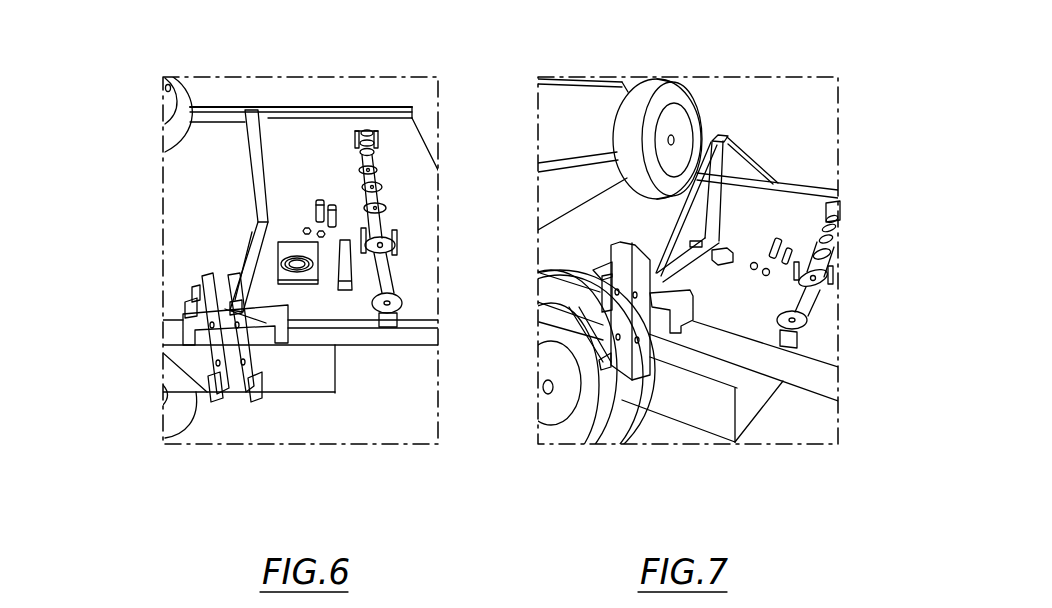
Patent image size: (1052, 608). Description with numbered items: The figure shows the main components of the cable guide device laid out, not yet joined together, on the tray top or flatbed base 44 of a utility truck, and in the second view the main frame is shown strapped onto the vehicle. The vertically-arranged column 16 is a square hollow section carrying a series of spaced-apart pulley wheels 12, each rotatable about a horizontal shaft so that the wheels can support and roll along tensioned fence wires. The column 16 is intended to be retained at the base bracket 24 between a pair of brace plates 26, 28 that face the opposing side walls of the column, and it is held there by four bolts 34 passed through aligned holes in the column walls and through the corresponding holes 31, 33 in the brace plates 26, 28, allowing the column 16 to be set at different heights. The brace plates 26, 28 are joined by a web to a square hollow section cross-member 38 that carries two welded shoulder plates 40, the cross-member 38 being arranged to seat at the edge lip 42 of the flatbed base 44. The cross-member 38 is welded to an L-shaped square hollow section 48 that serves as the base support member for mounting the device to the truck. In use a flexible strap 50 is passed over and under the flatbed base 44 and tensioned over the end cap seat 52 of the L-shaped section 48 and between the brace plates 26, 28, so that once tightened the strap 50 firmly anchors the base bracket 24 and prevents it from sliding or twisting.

In FIG. 6, the pulley wheel 12 is at (380, 151).
In FIG. 7, the pulley wheel 12 is at (805, 322).
In FIG. 6, the column 16 is at (383, 270).
In FIG. 7, the column 16 is at (807, 299).
In FIG. 6, the base bracket 24 is at (212, 176).
In FIG. 7, the brace plate 26 is at (640, 323).
In FIG. 7, the brace plate 28 is at (621, 325).
In FIG. 6, the hole 31 is at (250, 360).
In FIG. 6, the hole 33 is at (250, 360).
In FIG. 6, the bolt 34 is at (321, 198).
In FIG. 7, the bolt 34 is at (776, 236).
In FIG. 6, the cross-member 38 is at (190, 306).
In FIG. 7, the cross-member 38 is at (695, 298).
In FIG. 6, the shoulder plate 40 is at (190, 331).
In FIG. 7, the shoulder plate 40 is at (678, 333).
In FIG. 6, the edge lip 42 is at (543, 277).
In FIG. 6, the flatbed base 44 is at (578, 232).
In FIG. 6, the L-shaped square hollow section 48 is at (255, 232).
In FIG. 7, the L-shaped square hollow section 48 is at (748, 172).
In FIG. 7, the flexible strap 50 is at (705, 140).
In FIG. 6, the end cap seat 52 is at (246, 108).
In FIG. 7, the end cap seat 52 is at (722, 135).